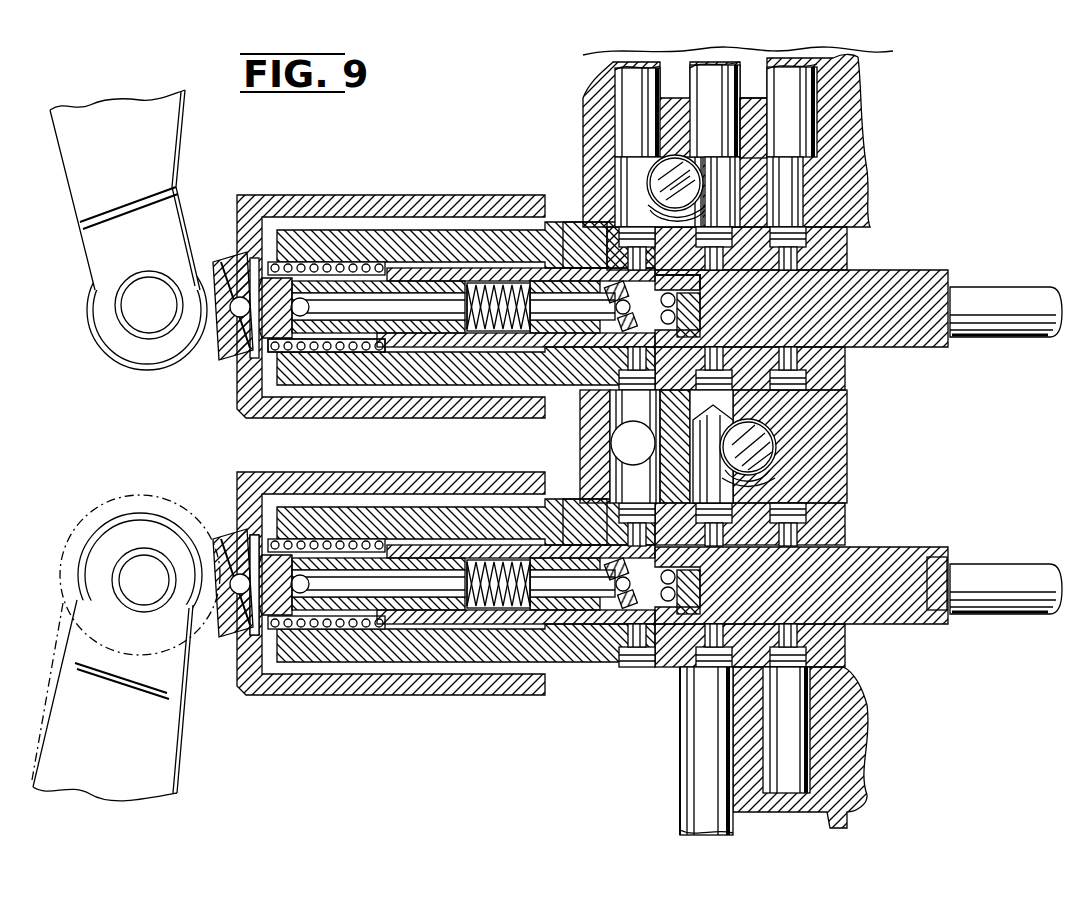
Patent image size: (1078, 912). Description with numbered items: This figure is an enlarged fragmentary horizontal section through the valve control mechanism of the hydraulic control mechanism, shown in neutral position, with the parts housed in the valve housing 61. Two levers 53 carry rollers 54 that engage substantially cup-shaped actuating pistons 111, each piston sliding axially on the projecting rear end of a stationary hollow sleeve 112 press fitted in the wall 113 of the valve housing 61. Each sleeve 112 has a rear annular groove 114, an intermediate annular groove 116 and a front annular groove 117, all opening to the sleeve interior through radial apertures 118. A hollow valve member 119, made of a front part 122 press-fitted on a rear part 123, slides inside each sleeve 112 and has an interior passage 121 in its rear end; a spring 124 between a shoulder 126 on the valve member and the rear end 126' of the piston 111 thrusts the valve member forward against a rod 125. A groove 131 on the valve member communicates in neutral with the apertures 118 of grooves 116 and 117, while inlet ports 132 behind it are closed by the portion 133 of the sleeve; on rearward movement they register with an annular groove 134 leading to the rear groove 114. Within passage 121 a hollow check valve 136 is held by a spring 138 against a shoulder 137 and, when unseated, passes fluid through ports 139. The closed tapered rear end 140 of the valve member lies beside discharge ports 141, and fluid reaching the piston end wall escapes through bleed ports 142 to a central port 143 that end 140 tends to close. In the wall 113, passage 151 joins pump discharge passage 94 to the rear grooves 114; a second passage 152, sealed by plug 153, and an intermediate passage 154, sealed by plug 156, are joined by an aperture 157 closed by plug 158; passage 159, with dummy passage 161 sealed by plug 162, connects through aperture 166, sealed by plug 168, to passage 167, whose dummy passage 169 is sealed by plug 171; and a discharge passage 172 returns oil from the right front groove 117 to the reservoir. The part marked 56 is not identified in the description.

The lever 53 is at (60, 139).
The roller 54 is at (88, 322).
The actuating plate 56 is at (240, 375).
The valve housing 61 is at (855, 708).
The passage 94 is at (600, 445).
The actuating piston 111 is at (250, 418).
The stationary hollow sleeve 112 is at (615, 393).
The wall 113 is at (607, 475).
The rear annular groove 114 is at (640, 222).
The intermediate annular groove 116 is at (800, 225).
The front annular groove 117 is at (795, 240).
The radially extending ports or apertures 118 is at (840, 248).
The hollow valve member 119 is at (905, 275).
The interior passage 121 is at (385, 266).
The front part 122 is at (415, 340).
The rear part 123 is at (340, 262).
The spring 124 is at (350, 262).
The rod 125 is at (1005, 292).
The shoulder 126 is at (354, 357).
The rear end of piston 126' is at (276, 353).
The groove 131 is at (840, 262).
The radially extending apertures or ports 132 is at (600, 245).
The portion of stationary sleeve 133 is at (800, 200).
The annular groove 134 is at (490, 347).
The check valve 136 is at (478, 290).
The shoulder 137 is at (616, 308).
The spring 138 is at (492, 272).
The radially extending ports 139 is at (610, 300).
The rear end of valve member 140 is at (236, 350).
The discharge ports 141 is at (310, 307).
The bleed apertures or ports 142 is at (250, 262).
The central port 143 is at (222, 352).
The passage 151 is at (610, 462).
The second passage 152 is at (625, 130).
The plug 153 is at (625, 105).
The intermediate passage 154 is at (733, 97).
The sealing plug 156 is at (695, 70).
The aperture 157 is at (658, 180).
The sealing plug 158 is at (650, 185).
The passage 159 is at (830, 436).
The dummy passage 161 is at (838, 135).
The plug 162 is at (827, 58).
The aperture 166 is at (770, 440).
The passage 167 is at (730, 478).
The sealing plug 168 is at (758, 430).
The dummy passage 169 is at (678, 790).
The sealing plug 171 is at (733, 805).
The discharge passage 172 is at (800, 760).